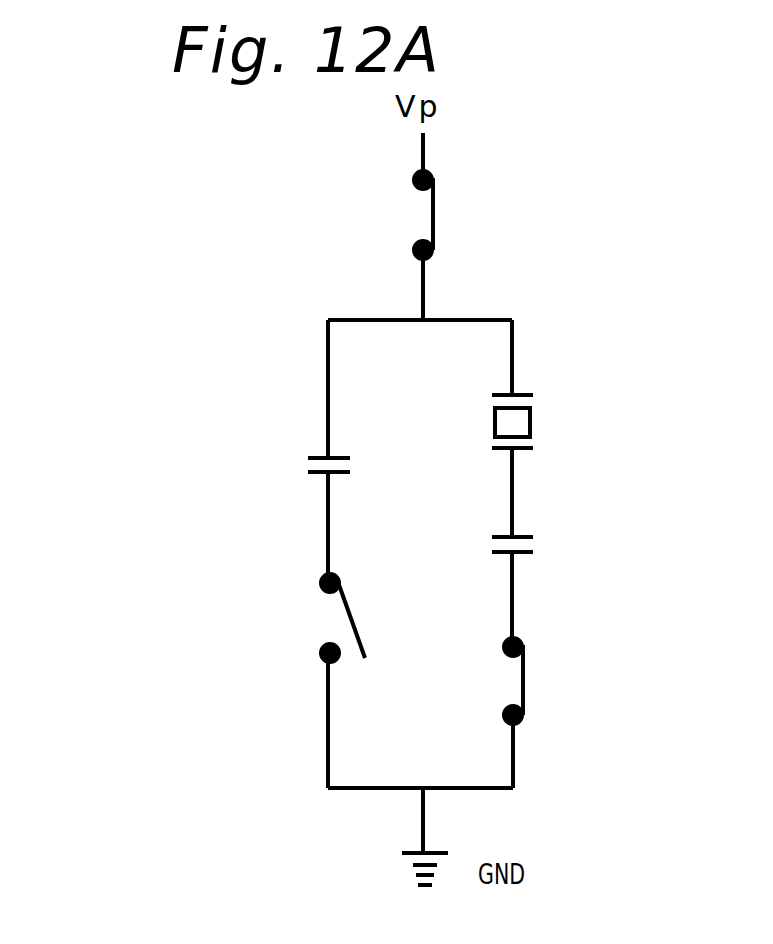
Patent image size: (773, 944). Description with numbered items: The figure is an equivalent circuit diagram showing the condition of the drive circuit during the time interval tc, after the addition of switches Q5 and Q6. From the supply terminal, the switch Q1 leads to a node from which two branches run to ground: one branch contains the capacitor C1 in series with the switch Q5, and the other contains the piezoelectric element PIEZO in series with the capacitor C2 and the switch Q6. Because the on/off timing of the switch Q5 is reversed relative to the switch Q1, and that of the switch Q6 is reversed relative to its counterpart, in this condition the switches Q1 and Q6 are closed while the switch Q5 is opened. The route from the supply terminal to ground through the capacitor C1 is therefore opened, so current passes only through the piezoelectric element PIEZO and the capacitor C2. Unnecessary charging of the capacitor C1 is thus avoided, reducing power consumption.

The switch Q1 is at (461, 215).
The capacitor C1 is at (291, 465).
The capacitor C2 is at (547, 545).
The switch Q5 is at (370, 618).
The switch Q6 is at (546, 681).
The piezoelectric element PIEZO is at (624, 410).